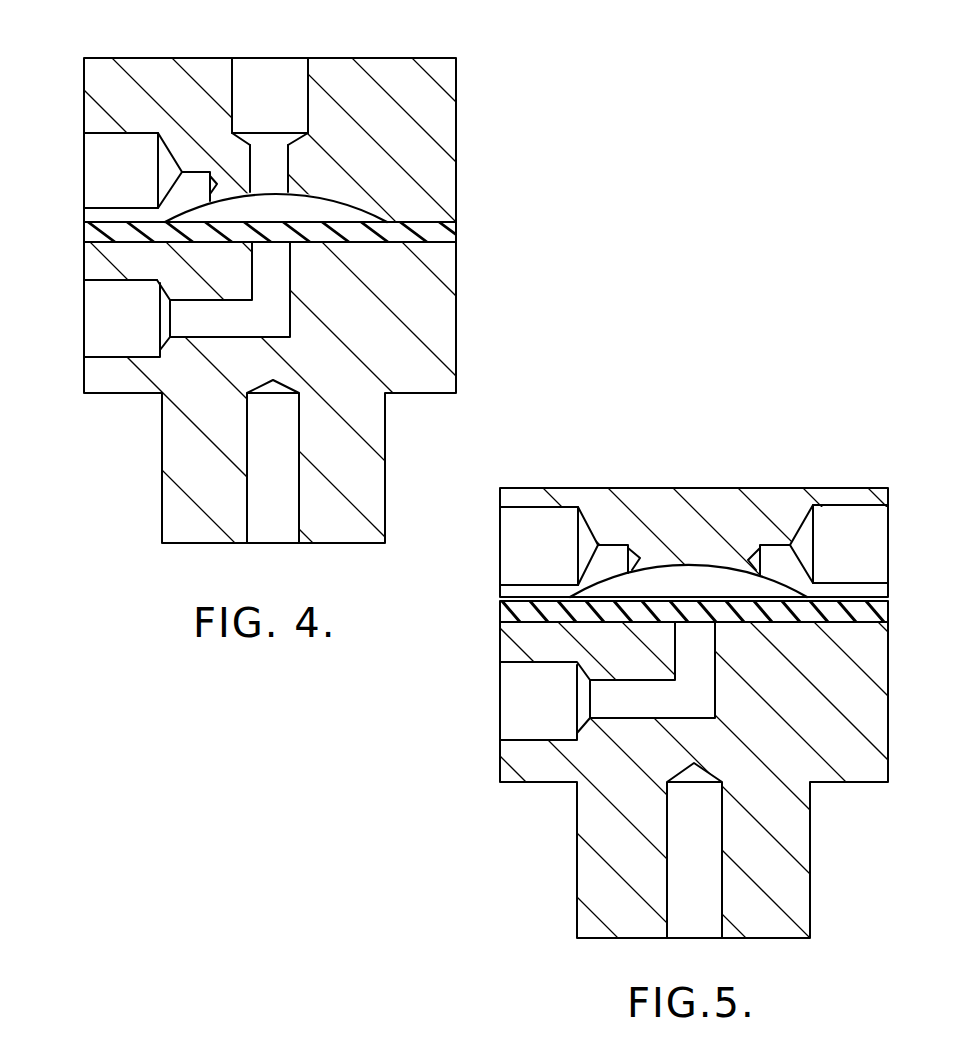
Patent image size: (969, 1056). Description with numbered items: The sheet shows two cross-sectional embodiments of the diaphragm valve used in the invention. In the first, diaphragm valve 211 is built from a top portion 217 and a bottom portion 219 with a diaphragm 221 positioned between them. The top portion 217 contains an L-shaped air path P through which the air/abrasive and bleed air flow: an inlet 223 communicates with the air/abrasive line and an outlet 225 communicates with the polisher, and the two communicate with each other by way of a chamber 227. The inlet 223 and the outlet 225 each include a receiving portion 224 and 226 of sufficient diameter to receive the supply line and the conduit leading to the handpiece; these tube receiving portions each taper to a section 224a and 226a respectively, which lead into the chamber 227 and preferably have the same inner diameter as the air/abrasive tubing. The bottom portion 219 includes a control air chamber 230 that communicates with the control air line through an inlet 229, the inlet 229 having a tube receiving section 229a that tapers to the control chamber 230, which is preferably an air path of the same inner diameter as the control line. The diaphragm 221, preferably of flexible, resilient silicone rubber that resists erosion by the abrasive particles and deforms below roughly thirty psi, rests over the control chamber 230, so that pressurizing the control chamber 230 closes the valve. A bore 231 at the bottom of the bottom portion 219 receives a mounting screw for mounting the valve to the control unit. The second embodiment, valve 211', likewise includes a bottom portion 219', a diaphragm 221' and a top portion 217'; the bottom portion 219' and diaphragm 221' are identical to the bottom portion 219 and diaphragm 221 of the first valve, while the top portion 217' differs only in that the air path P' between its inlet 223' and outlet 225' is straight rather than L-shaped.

In FIG. 4, the diaphragm valve 211 is at (484, 528).
In FIG. 4, the top portion 217 is at (484, 528).
In FIG. 4, the bottom portion 219 is at (484, 528).
In FIG. 4, the diaphragm 221 is at (309, 219).
In FIG. 4, the inlet 223 is at (91, 170).
In FIG. 4, the receiving portion 224 is at (132, 136).
In FIG. 4, the section 224a is at (190, 180).
In FIG. 4, the outlet 225 is at (256, 74).
In FIG. 4, the receiving portion 226 is at (236, 106).
In FIG. 4, the section 226a is at (352, 158).
In FIG. 4, the chamber 227 is at (316, 219).
In FIG. 4, the inlet 229 is at (120, 357).
In FIG. 4, the tube receiving section 229a is at (148, 357).
In FIG. 4, the control air chamber 230 is at (271, 262).
In FIG. 4, the bore 231 is at (244, 532).
In FIG. 5, the valve 211' is at (484, 528).
In FIG. 5, the top portion 217' is at (512, 528).
In FIG. 5, the bottom portion 219' is at (484, 528).
In FIG. 5, the diaphragm 221' is at (660, 603).
In FIG. 5, the inlet 223' is at (505, 546).
In FIG. 5, the outlet 225' is at (850, 544).